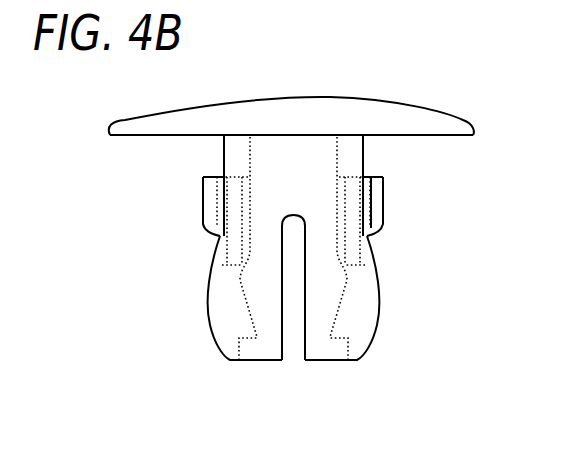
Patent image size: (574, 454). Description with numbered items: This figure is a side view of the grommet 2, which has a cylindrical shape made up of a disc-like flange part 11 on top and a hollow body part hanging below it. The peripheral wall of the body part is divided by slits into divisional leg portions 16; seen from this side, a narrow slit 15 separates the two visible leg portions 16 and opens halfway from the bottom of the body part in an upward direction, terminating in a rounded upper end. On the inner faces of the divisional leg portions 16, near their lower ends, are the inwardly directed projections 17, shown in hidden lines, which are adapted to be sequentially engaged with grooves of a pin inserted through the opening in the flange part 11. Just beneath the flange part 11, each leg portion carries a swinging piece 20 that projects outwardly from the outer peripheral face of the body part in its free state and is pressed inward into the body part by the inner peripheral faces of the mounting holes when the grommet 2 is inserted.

The grommet 2 is at (347, 92).
The flange part 11 is at (408, 109).
The narrow slit 15 is at (290, 348).
The divisional leg portion 16 is at (220, 314).
The inwardly directed projection 17 is at (257, 328).
The swinging piece 20 is at (203, 200).